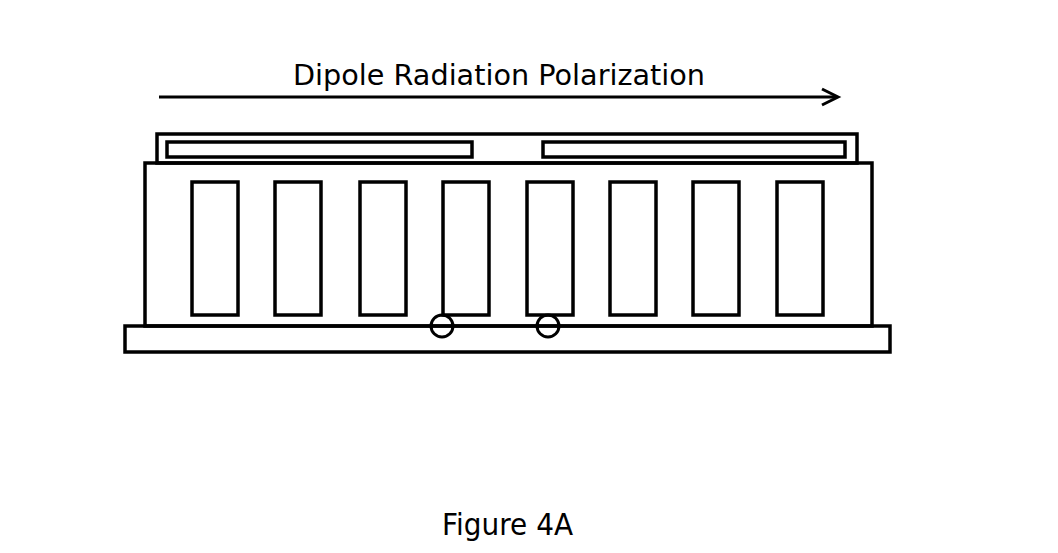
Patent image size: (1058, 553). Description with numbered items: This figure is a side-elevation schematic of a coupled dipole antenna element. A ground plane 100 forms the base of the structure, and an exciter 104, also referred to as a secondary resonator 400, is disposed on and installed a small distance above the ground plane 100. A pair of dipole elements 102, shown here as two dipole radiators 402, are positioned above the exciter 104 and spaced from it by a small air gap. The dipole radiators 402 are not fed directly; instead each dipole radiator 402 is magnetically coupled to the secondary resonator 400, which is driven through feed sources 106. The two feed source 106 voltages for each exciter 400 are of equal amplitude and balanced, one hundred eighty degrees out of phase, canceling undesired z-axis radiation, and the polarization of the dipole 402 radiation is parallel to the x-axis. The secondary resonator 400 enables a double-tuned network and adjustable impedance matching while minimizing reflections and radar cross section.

The ground plane 100 is at (125, 345).
The dipole elements 102 is at (157, 147).
The exciter 104 is at (145, 216).
The feed sources 106 is at (433, 333).
The secondary resonator 400 is at (823, 291).
The dipole radiators 402 is at (852, 137).